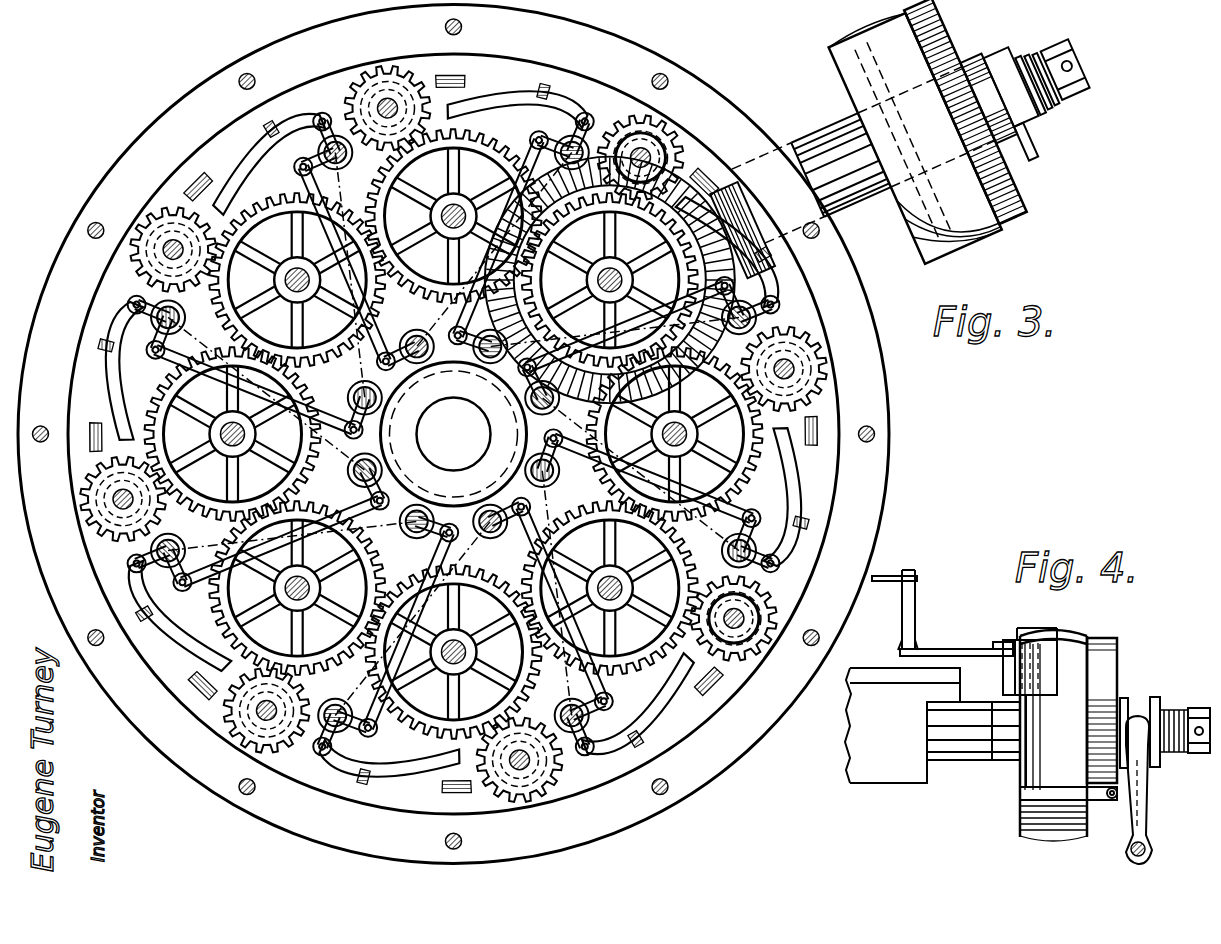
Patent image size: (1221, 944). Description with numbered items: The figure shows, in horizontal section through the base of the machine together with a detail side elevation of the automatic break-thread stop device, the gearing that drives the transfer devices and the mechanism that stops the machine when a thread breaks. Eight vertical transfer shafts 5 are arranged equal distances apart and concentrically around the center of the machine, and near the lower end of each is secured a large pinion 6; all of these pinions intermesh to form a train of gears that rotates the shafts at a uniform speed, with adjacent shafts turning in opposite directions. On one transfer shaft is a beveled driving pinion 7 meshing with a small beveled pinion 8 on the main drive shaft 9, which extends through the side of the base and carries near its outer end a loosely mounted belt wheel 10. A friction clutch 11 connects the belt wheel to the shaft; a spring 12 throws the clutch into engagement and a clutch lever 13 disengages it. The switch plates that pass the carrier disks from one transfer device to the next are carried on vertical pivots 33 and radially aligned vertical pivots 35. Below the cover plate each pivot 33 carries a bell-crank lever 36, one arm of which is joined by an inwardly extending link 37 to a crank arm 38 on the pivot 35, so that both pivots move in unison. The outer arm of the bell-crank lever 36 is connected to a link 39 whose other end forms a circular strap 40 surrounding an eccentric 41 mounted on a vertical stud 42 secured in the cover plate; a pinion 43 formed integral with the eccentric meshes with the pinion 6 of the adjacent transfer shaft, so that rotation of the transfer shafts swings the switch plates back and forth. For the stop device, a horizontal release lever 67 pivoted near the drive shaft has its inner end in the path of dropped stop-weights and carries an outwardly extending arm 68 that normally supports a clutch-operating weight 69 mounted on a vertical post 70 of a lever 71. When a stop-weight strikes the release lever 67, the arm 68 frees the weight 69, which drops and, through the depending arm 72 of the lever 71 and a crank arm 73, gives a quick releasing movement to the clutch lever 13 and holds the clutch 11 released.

In FIG. 3, the transfer shaft 5 is at (458, 212).
In FIG. 3, the large pinion 6 is at (513, 152).
In FIG. 3, the beveled driving pinion 7 is at (765, 326).
In FIG. 3, the small beveled pinion 8 is at (765, 266).
In FIG. 3, the main drive shaft 9 is at (1062, 108).
In FIG. 3, the belt wheel 10 is at (848, 70).
In FIG. 4, the belt wheel 10 is at (1068, 672).
In FIG. 3, the friction clutch 11 is at (1010, 176).
In FIG. 4, the friction clutch 11 is at (1100, 684).
In FIG. 3, the spring 12 is at (1060, 92).
In FIG. 4, the spring 12 is at (1168, 732).
In FIG. 3, the clutch lever 13 is at (1032, 135).
In FIG. 4, the clutch lever 13 is at (1143, 782).
In FIG. 3, the vertical pivot 33 is at (335, 166).
In FIG. 3, the vertical pivot 35 is at (478, 370).
In FIG. 3, the bell-crank lever 36 is at (300, 166).
In FIG. 3, the link 37 is at (372, 318).
In FIG. 3, the crank arm 38 is at (368, 422).
In FIG. 3, the link 39 is at (505, 92).
In FIG. 3, the circular strap 40 is at (640, 130).
In FIG. 3, the eccentric 41 is at (626, 146).
In FIG. 3, the vertical stud 42 is at (418, 102).
In FIG. 3, the pinion 43 is at (390, 102).
In FIG. 4, the release lever 67 is at (906, 570).
In FIG. 4, the arm 68 is at (977, 649).
In FIG. 4, the clutch-operating weight 69 is at (1058, 646).
In FIG. 4, the vertical post 70 is at (1030, 770).
In FIG. 4, the lever 71 is at (1045, 792).
In FIG. 4, the depending arm 72 is at (1112, 805).
In FIG. 4, the crank arm 73 is at (1150, 838).